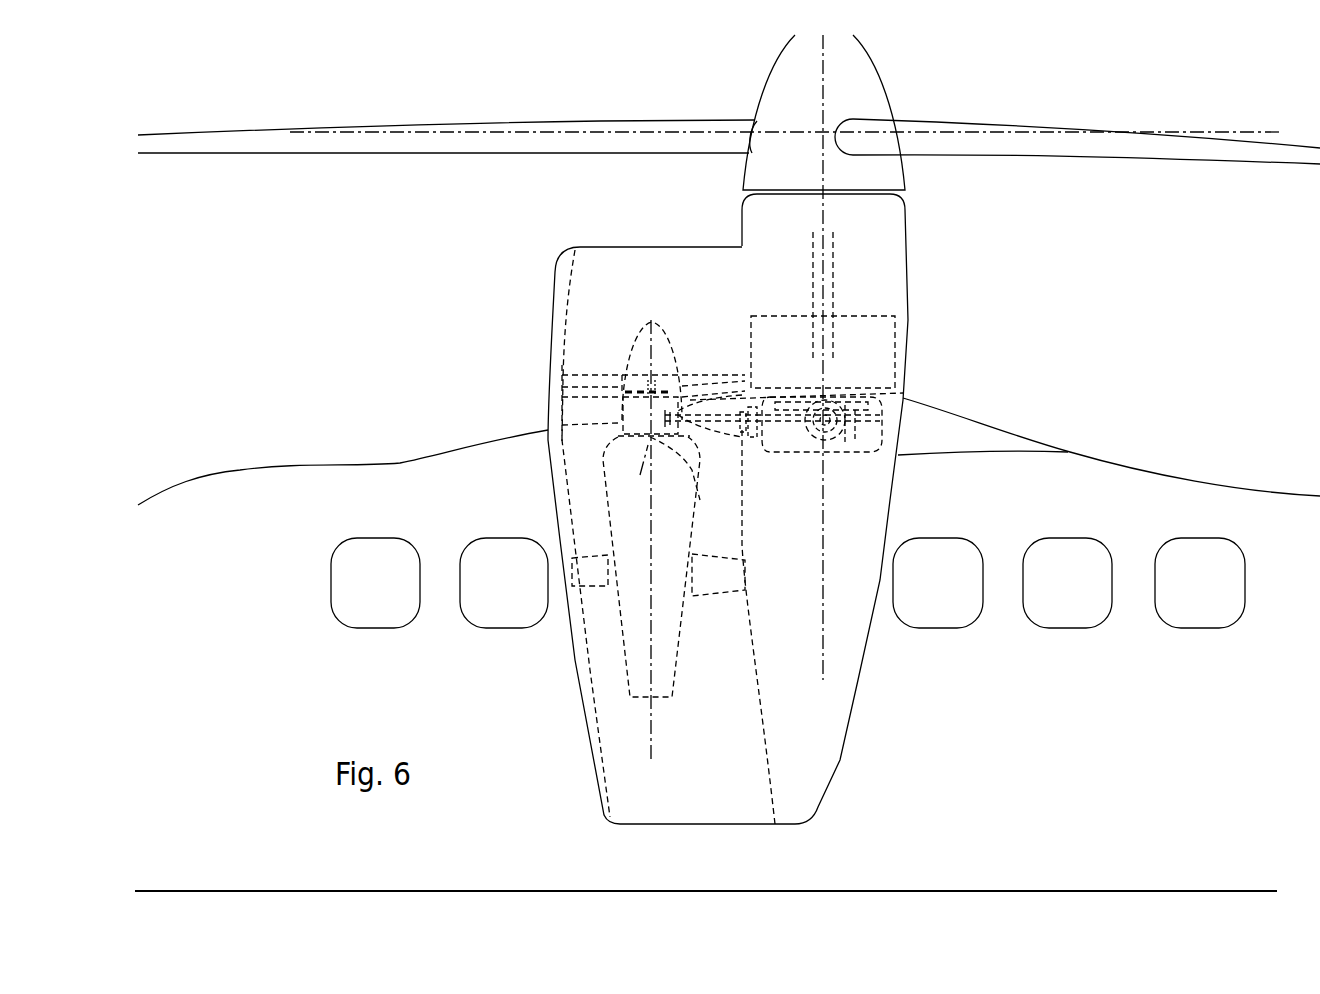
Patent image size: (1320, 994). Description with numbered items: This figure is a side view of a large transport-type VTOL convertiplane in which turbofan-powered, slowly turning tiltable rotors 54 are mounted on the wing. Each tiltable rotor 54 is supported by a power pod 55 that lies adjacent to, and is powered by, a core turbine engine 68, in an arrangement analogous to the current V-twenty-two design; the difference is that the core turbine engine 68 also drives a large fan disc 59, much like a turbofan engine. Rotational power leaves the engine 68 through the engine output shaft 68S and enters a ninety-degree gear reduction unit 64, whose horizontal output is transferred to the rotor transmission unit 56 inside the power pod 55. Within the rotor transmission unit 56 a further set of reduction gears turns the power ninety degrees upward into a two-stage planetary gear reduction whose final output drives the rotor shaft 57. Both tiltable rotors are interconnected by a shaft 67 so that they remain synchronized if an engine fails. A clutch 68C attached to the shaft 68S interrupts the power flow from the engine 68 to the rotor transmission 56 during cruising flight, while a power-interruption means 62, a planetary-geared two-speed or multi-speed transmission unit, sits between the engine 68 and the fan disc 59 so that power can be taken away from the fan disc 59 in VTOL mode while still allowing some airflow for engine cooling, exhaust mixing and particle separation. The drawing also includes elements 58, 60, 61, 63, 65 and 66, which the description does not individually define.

The tiltable rotor 54 is at (900, 108).
The power pod 55 is at (920, 272).
The rotor transmission unit 56 is at (890, 340).
The rotor shaft 57 is at (833, 246).
The fuselage 58 is at (975, 418).
The fan disc 59 is at (597, 374).
The landing gear fairing pod 60 is at (556, 290).
The gear box housing 61 is at (563, 422).
The power-interruption means 62 is at (686, 378).
The landing gear door 63 is at (694, 450).
The 90-degree gear reduction unit 64 is at (618, 424).
The drive shaft 65 is at (770, 440).
The gearbox 66 is at (840, 410).
The interconnecting shaft 67 is at (848, 445).
The core turbine engine 68 is at (605, 500).
The engine output shaft 68S is at (651, 567).
The clutch 68C is at (750, 437).